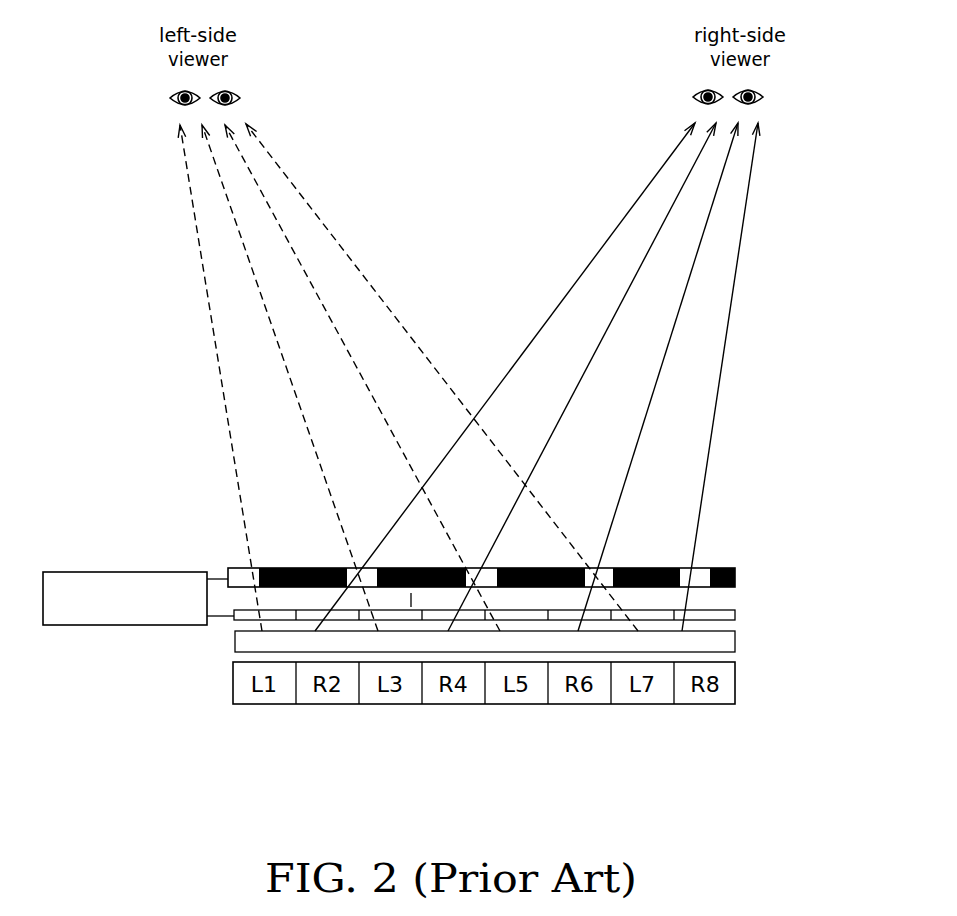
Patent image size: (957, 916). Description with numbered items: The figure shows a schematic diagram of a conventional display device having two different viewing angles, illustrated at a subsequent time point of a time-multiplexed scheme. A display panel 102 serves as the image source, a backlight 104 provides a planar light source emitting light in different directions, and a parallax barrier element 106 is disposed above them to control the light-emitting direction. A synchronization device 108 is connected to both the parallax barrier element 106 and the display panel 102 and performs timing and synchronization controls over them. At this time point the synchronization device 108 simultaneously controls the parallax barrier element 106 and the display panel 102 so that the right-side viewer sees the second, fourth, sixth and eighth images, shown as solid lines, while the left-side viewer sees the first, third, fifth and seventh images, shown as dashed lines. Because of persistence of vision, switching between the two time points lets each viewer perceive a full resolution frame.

The display panel 102 is at (735, 613).
The backlight 104 is at (735, 640).
The parallax barrier element 106 is at (228, 572).
The synchronization device 108 is at (155, 625).